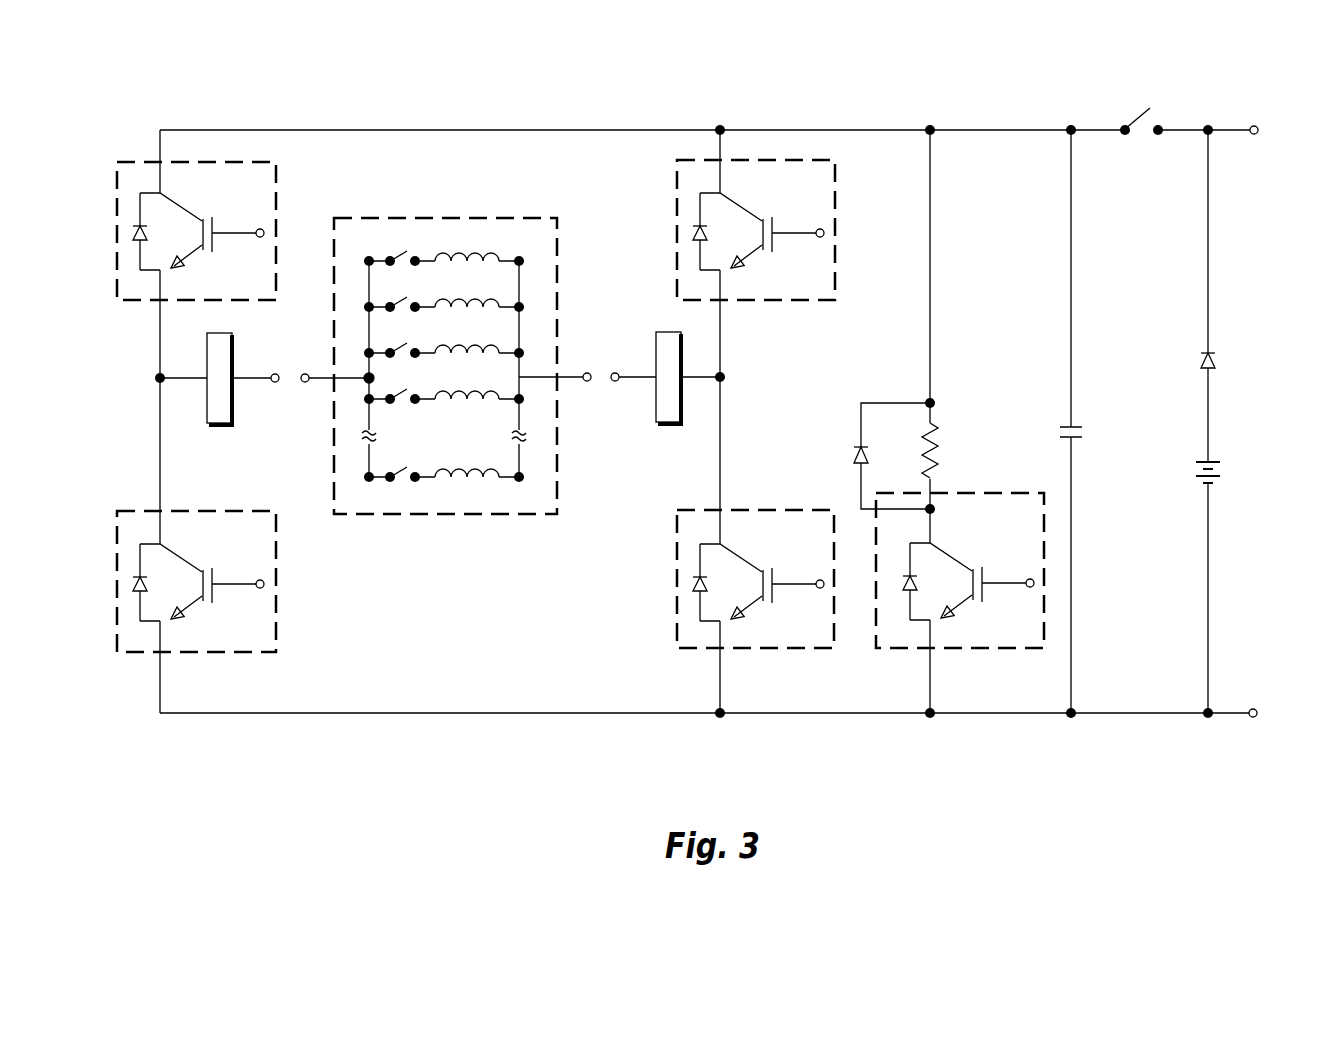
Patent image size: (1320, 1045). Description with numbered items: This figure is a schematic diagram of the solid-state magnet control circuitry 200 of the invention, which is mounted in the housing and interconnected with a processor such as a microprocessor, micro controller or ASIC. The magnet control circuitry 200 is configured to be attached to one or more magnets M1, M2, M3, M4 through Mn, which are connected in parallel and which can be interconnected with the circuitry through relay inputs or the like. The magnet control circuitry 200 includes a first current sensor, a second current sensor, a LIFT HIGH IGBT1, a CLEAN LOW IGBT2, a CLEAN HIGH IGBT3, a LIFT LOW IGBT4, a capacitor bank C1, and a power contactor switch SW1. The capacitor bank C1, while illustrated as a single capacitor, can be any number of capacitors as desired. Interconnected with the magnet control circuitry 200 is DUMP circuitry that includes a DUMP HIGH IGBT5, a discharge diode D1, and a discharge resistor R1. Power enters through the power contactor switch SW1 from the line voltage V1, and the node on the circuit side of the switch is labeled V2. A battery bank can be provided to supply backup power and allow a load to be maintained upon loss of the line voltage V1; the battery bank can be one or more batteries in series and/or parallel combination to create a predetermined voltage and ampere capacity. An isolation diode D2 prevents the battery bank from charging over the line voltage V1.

The magnet control circuitry 200 is at (841, 90).
The LIFT HIGH IGBT IGBT1 is at (196, 231).
The CLEAN LOW IGBT IGBT2 is at (196, 581).
The CLEAN HIGH IGBT IGBT3 is at (756, 230).
The LIFT LOW IGBT IGBT4 is at (755, 579).
The DUMP HIGH IGBT IGBT5 is at (960, 570).
The magnet M1 is at (444, 249).
The magnet M2 is at (444, 295).
The magnet M3 is at (444, 341).
The magnet M4 is at (444, 387).
The magnet Mn is at (444, 465).
The power contactor switch SW1 is at (1151, 109).
The line voltage V1 is at (1209, 117).
The voltage node V2 is at (1071, 117).
The discharge resistor R1 is at (946, 450).
The capacitor bank C1 is at (1087, 432).
The discharge diode D1 is at (878, 456).
The isolation diode D2 is at (1223, 363).